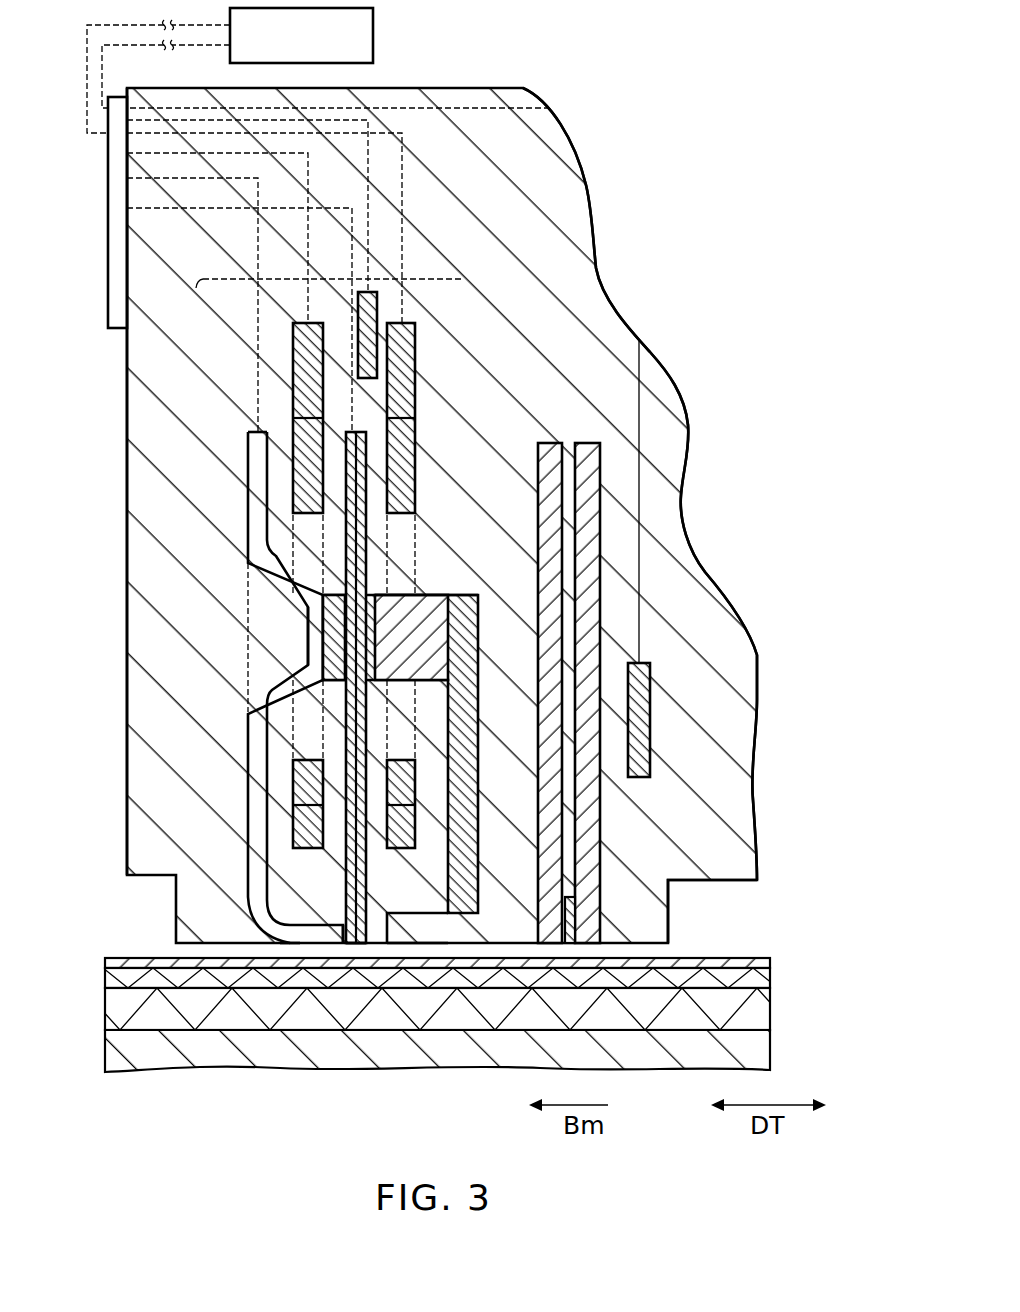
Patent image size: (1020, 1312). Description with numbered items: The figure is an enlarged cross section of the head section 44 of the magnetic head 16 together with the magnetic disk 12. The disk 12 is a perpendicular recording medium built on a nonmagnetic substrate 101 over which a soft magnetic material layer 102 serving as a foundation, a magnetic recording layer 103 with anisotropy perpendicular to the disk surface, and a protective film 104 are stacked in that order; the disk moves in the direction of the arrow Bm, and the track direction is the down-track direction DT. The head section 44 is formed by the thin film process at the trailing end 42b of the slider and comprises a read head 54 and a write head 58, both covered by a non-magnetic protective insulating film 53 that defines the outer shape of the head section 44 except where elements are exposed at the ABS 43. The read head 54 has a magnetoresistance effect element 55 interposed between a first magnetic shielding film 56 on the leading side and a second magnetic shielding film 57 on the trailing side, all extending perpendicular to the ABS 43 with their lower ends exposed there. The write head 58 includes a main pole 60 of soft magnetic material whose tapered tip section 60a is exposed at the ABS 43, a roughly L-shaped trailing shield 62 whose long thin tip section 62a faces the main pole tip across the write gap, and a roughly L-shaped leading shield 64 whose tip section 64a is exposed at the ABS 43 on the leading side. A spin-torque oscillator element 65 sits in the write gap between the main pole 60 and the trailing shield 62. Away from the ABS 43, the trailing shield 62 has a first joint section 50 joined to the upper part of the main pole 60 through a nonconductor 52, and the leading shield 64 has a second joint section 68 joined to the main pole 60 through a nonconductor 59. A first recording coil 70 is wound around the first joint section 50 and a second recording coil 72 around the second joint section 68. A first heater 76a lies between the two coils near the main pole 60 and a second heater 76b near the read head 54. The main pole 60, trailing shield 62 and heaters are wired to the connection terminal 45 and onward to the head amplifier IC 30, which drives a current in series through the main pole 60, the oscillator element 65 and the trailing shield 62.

The magnetic disk 12 is at (403, 1056).
The magnetic head 16 is at (654, 224).
The head amplifier IC 30 is at (374, 36).
The trailing end 42b is at (127, 527).
The ABS 43 is at (727, 882).
The head section 44 is at (678, 420).
The connection terminal 45 is at (106, 258).
The first joint section 50 is at (316, 650).
The nonconductor 52 is at (334, 620).
The protective insulating film 53 is at (140, 443).
The read head 54 is at (670, 667).
The magnetoresistance effect element 55 is at (578, 910).
The first magnetic shielding film 56 is at (592, 645).
The second magnetic shielding film 57 is at (564, 593).
The write head 58 is at (329, 280).
The nonconductor 59 is at (380, 625).
The main pole 60 is at (363, 846).
The tip section 60a is at (361, 944).
The trailing shield 62 is at (238, 730).
The tip section 62a is at (293, 942).
The leading shield 64 is at (479, 652).
The tip section 64a is at (433, 933).
The spin-torque oscillator element 65 is at (348, 946).
The second joint section 68 is at (428, 594).
The first recording coil 70 is at (300, 436).
The second recording coil 72 is at (410, 445).
The first heater 76a is at (378, 322).
The second heater 76b is at (650, 708).
The substrate 101 is at (108, 1050).
The soft magnetic material layer 102 is at (108, 1008).
The magnetic recording layer 103 is at (108, 978).
The protective film 104 is at (108, 960).